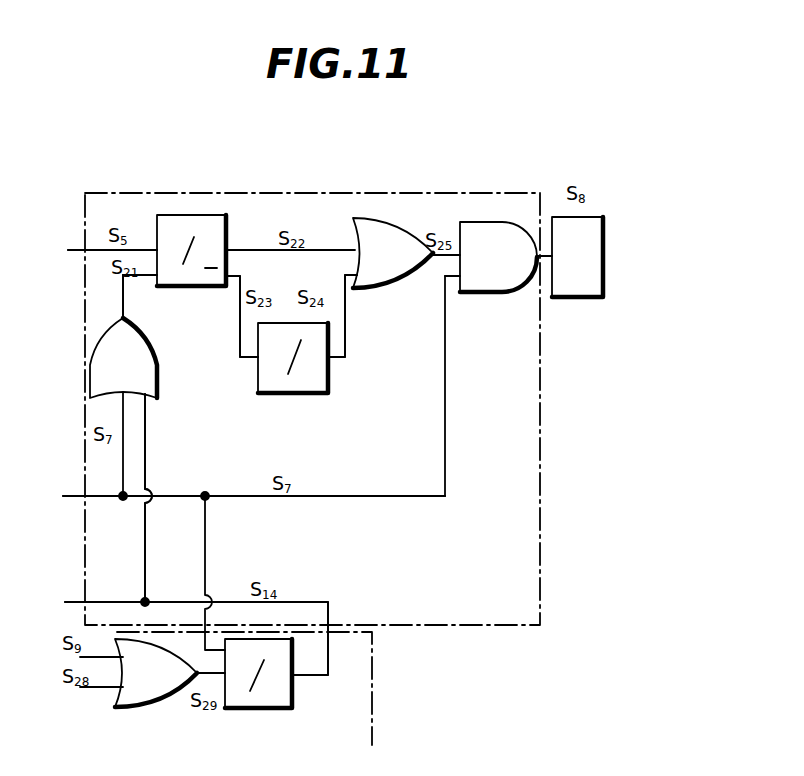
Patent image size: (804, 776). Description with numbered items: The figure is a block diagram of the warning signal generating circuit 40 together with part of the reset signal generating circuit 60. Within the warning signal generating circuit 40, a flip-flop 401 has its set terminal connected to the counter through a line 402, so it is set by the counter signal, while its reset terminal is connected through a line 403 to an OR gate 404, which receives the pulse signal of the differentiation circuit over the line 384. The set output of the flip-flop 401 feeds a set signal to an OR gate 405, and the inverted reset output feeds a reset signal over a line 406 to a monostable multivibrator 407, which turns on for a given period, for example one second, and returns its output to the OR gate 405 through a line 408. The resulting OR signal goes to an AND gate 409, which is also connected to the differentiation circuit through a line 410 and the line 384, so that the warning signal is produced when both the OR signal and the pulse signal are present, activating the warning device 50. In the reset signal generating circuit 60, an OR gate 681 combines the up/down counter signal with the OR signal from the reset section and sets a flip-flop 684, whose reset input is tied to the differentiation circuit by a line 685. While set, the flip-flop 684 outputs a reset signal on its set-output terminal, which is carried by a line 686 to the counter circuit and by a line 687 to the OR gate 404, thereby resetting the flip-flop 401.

The warning signal generating circuit 40 is at (343, 193).
The flip-flop 401 is at (207, 215).
The line 402 is at (110, 252).
The line 403 is at (123, 298).
The OR gate 404 is at (157, 350).
The OR gate 405 is at (414, 216).
The line 406 is at (239, 288).
The monostable multivibrator 407 is at (305, 395).
The line 408 is at (345, 327).
The AND gate 409 is at (503, 222).
The line 410 is at (445, 402).
The warning device 50 is at (603, 250).
The line 384 is at (100, 493).
The line 687 is at (145, 440).
The line 685 is at (205, 540).
The line 686 is at (308, 602).
The flip-flop 684 is at (294, 690).
The OR gate 681 is at (150, 708).
The reset signal generating circuit 60 is at (372, 702).